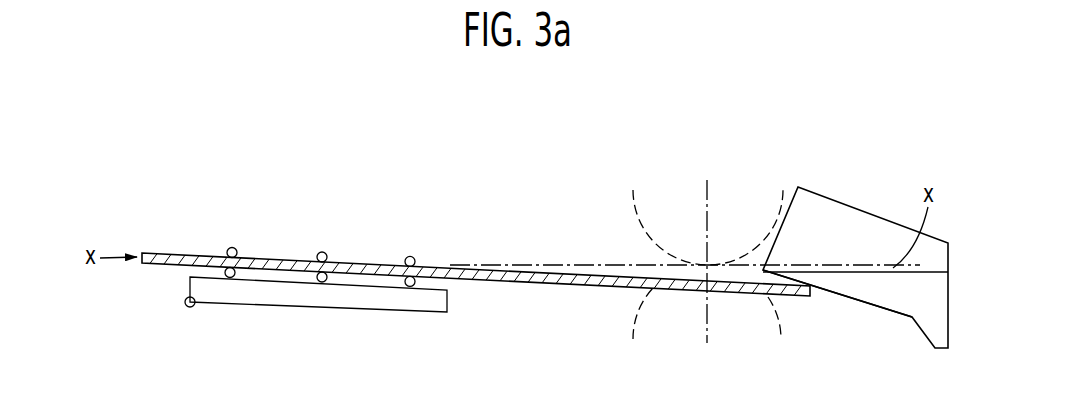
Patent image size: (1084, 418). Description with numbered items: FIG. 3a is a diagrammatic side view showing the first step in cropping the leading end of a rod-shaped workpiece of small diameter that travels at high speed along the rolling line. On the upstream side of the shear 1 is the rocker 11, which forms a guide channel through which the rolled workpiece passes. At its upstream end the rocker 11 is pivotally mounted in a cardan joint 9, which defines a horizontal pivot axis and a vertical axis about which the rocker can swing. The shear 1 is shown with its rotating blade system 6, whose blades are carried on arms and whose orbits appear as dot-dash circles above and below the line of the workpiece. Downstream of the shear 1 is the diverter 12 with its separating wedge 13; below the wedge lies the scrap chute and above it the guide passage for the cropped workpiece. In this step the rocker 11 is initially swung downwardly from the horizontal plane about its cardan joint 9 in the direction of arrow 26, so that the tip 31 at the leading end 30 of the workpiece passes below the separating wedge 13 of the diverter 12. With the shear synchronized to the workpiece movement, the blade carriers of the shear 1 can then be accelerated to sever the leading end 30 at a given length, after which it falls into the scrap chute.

The shear 1 is at (750, 213).
The rotating blade system 6 is at (636, 203).
The cardan joint 9 is at (186, 306).
The rocker 11 is at (315, 298).
The diverter 12 is at (827, 228).
The separating wedge 13 is at (862, 268).
The arrow 26 is at (457, 308).
The leading end 30 is at (793, 298).
The tip 31 is at (815, 292).